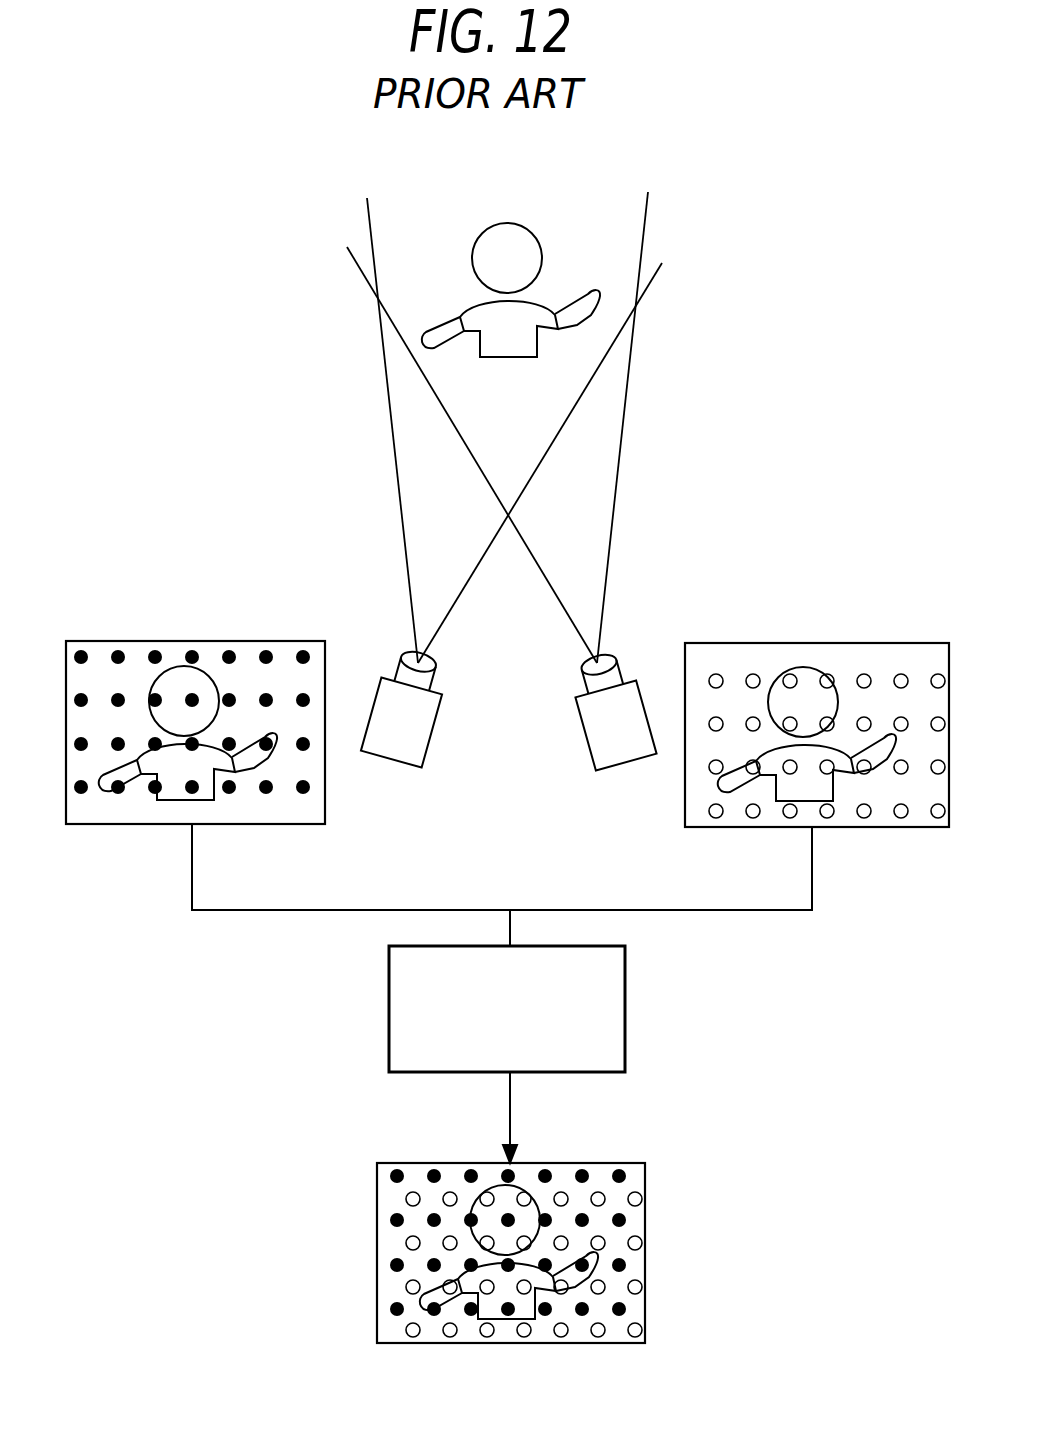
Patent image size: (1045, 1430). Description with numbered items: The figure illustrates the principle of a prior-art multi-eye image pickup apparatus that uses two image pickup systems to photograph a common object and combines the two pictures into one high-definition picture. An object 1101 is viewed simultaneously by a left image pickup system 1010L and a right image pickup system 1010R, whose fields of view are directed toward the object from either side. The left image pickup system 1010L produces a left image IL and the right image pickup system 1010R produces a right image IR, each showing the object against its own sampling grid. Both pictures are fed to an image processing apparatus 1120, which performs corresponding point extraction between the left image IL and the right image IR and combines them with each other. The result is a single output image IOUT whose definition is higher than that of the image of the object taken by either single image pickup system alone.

The object 1101 is at (505, 223).
The left image pickup system 1010L is at (395, 766).
The right image pickup system 1010R is at (614, 757).
The image processing apparatus 1120 is at (627, 994).
The left image IL is at (103, 641).
The right image IR is at (722, 643).
The output image IOUT is at (647, 1210).